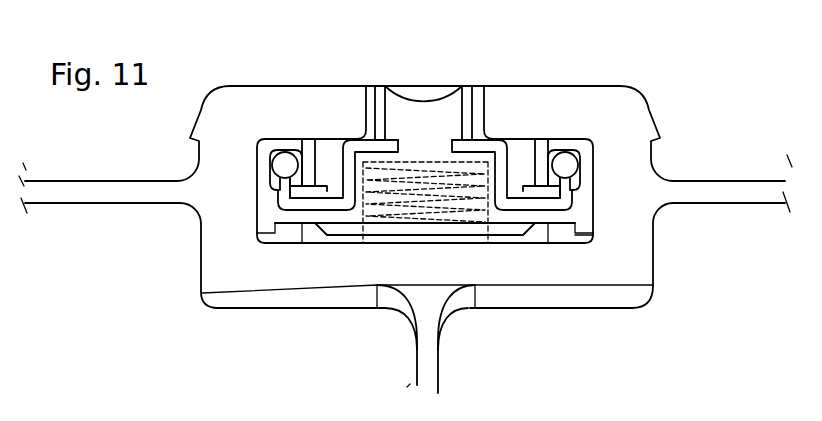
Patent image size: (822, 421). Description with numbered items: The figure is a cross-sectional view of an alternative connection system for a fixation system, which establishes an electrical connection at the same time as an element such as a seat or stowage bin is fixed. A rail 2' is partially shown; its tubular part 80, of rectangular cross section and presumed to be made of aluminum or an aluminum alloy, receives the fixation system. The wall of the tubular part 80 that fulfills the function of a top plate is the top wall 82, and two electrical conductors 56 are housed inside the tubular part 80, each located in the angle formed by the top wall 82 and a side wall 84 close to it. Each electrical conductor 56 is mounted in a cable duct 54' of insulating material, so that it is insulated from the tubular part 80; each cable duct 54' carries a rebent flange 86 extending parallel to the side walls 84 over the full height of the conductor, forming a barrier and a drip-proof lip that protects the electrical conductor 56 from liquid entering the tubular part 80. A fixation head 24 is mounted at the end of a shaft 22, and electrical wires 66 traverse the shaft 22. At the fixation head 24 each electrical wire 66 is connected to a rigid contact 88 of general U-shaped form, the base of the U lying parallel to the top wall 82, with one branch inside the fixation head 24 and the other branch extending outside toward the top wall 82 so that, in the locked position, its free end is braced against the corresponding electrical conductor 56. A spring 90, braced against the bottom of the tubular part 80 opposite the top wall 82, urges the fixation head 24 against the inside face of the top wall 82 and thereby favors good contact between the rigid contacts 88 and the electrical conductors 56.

The rail 2' is at (436, 339).
The shaft 22 is at (420, 107).
The fixation head 24 is at (495, 217).
The cable duct 54' is at (594, 302).
The electrical conductor 56 is at (287, 170).
The electrical wire 66 is at (384, 92).
The tubular part 80 is at (307, 272).
The top wall 82 is at (530, 110).
The side wall 84 is at (213, 268).
The rebent flange 86 is at (308, 163).
The rigid contact 88 is at (295, 210).
The spring 90 is at (387, 203).